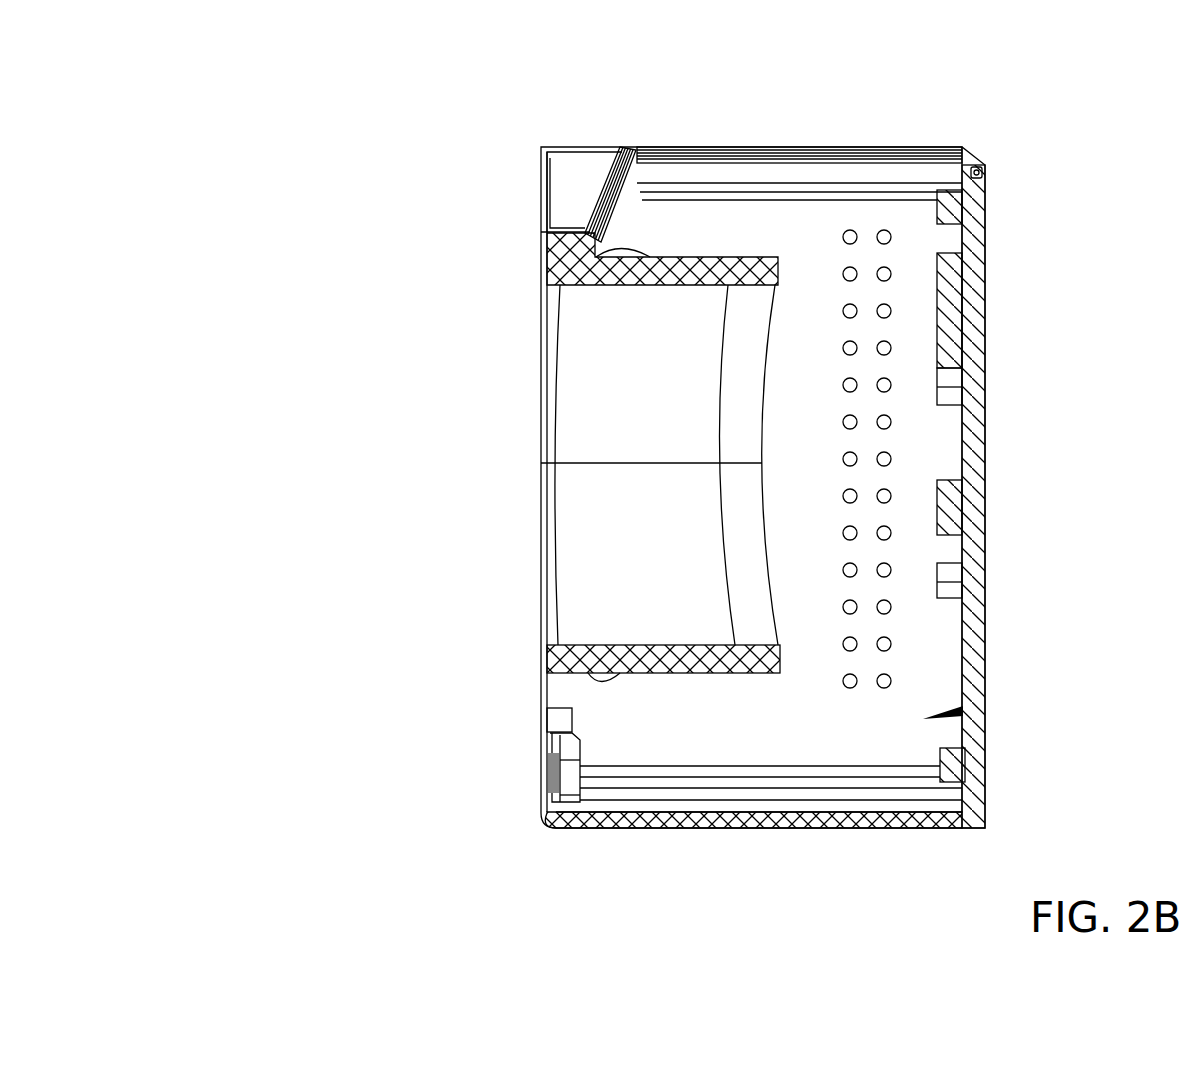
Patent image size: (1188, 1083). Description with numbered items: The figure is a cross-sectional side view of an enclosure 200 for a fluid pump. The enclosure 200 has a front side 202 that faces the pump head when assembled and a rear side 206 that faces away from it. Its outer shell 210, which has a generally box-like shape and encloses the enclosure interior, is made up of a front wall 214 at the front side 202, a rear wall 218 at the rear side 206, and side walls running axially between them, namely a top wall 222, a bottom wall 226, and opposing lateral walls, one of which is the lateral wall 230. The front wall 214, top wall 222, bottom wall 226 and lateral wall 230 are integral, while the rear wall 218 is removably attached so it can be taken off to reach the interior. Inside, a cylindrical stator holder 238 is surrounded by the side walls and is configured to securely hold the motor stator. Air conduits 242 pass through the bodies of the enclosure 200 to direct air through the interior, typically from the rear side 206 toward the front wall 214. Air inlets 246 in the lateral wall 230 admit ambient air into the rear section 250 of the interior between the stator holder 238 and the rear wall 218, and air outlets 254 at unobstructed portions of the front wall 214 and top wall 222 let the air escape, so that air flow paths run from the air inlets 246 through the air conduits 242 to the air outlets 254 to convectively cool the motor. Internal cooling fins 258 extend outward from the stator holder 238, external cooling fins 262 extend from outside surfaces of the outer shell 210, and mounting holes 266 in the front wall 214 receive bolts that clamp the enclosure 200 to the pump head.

The enclosure 200 is at (255, 172).
The front side 202 is at (205, 458).
The rear side 206 is at (1125, 470).
The outer shell 210 is at (978, 90).
The front wall 214 is at (540, 192).
The rear wall 218 is at (986, 212).
The top wall 222 is at (703, 146).
The bottom wall 226 is at (770, 830).
The lateral wall 230 is at (786, 218).
The stator holder 238 is at (575, 383).
The air conduits 242 is at (540, 270).
The air inlets 246 is at (892, 383).
The rear section 250 is at (962, 710).
The air outlets 254 is at (590, 200).
The internal cooling fins 258 is at (600, 252).
The external cooling fins 262 is at (902, 146).
The mounting holes 266 is at (538, 172).